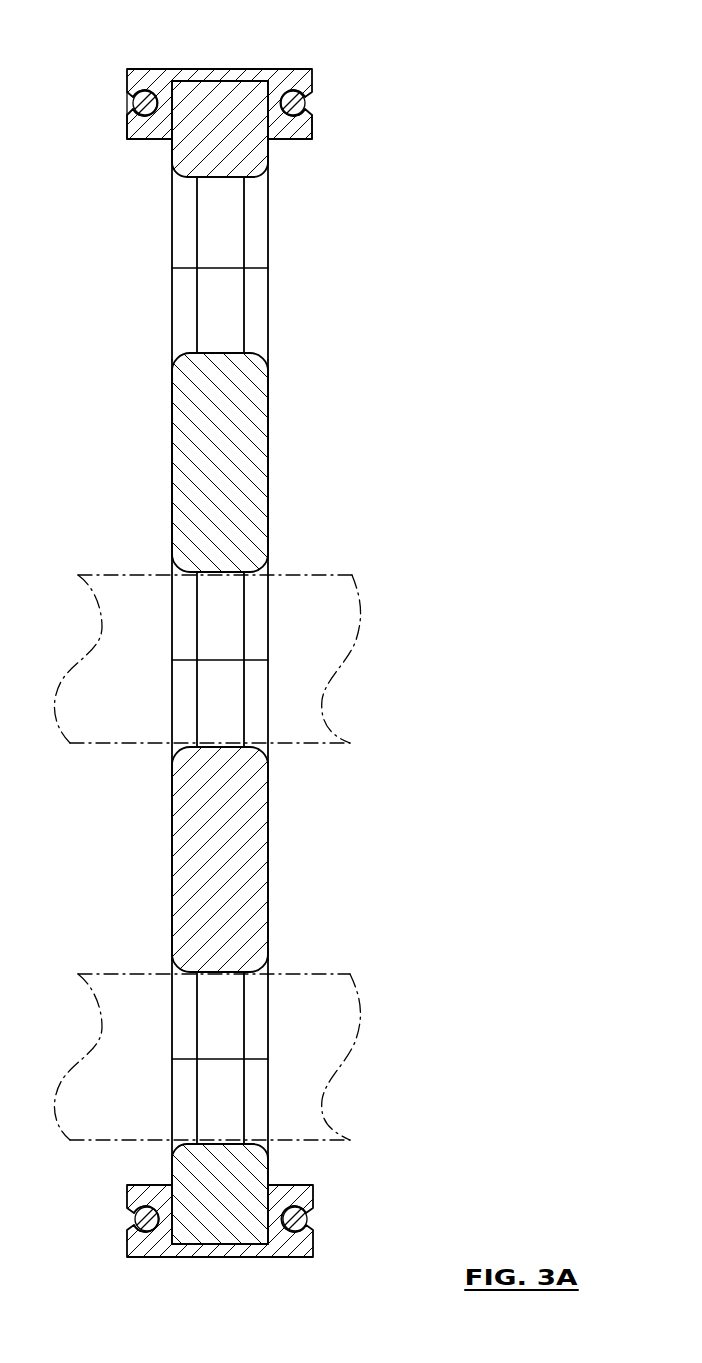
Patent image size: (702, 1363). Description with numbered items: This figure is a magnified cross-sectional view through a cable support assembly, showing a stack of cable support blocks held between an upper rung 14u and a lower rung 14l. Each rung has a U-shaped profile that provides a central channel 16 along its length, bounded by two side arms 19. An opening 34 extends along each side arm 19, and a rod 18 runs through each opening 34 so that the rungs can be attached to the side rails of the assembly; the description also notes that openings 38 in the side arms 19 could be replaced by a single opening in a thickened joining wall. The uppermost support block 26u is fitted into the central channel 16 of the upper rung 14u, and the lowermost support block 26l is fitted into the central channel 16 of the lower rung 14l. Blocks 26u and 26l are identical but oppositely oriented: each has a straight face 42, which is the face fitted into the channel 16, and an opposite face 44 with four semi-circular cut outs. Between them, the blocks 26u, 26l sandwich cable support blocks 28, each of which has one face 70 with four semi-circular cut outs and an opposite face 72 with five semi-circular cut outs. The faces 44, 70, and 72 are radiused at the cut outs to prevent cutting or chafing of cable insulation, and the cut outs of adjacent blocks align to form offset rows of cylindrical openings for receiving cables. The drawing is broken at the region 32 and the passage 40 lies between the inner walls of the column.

The upper rung 14u is at (278, 72).
The lower rung 14l is at (285, 1257).
The straight face 42 is at (185, 80).
The opening 34 is at (307, 100).
The rod 18 is at (305, 105).
The side arm 19 is at (127, 123).
The central channel 16 is at (200, 130).
The uppermost support block 26u is at (270, 147).
The lowermost support block 26l is at (190, 1180).
The openings in the side arms 38 is at (245, 223).
The inner channel 40 is at (245, 317).
The face with four semi-circular cut outs 70 is at (218, 352).
The cable support block 28 is at (268, 463).
The break section 32 is at (362, 617).
The face with five semi-circular cut outs 72 is at (220, 577).
The face with four semi-circular cut outs 44 is at (220, 1142).